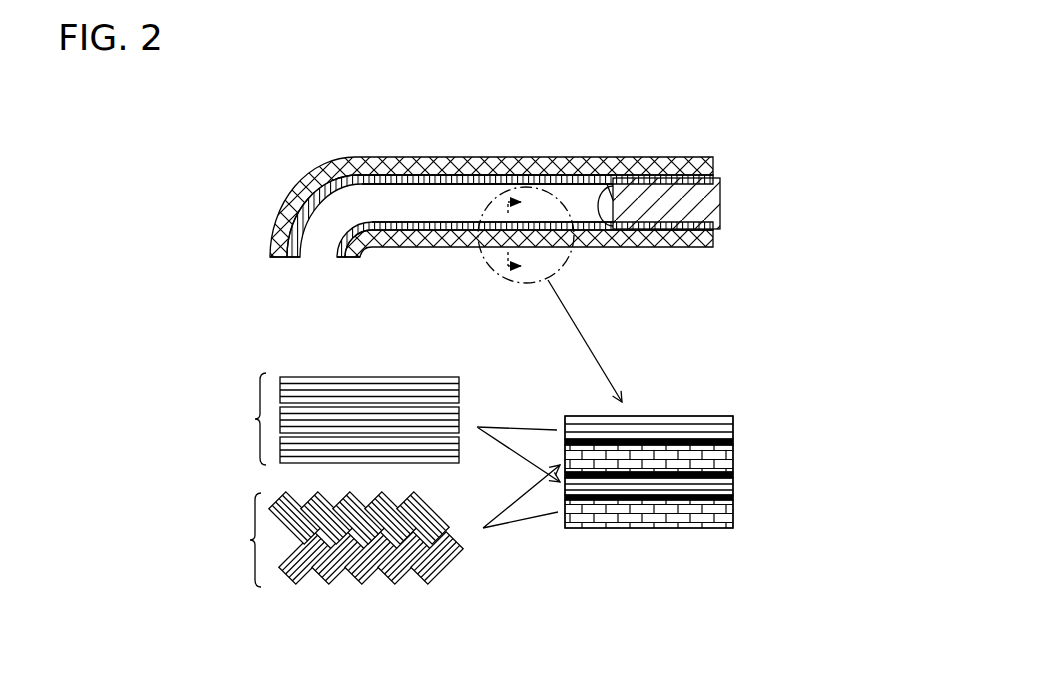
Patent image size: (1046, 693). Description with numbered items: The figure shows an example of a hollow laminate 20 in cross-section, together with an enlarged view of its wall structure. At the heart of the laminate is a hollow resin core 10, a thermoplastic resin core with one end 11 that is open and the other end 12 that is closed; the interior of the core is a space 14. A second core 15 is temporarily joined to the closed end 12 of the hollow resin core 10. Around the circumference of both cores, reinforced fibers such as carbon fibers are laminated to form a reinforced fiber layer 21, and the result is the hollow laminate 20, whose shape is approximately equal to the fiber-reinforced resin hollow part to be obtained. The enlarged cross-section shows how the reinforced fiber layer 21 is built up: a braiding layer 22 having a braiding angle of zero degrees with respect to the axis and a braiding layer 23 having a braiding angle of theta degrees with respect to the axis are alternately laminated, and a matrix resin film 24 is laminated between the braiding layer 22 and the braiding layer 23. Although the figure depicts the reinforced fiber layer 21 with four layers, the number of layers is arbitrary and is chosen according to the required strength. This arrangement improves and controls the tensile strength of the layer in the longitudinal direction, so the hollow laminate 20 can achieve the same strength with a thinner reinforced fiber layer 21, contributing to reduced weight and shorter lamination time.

The hollow laminate 20 is at (553, 354).
The reinforced fiber layer 21 is at (458, 167).
The hollow resin core 10 is at (565, 186).
The open end 11 is at (318, 243).
The closed end 12 is at (610, 232).
The space 14 is at (466, 205).
The second core 15 is at (700, 203).
The braiding layer 22 is at (797, 543).
The braiding layer 23 is at (799, 476).
The matrix resin film 24 is at (735, 442).